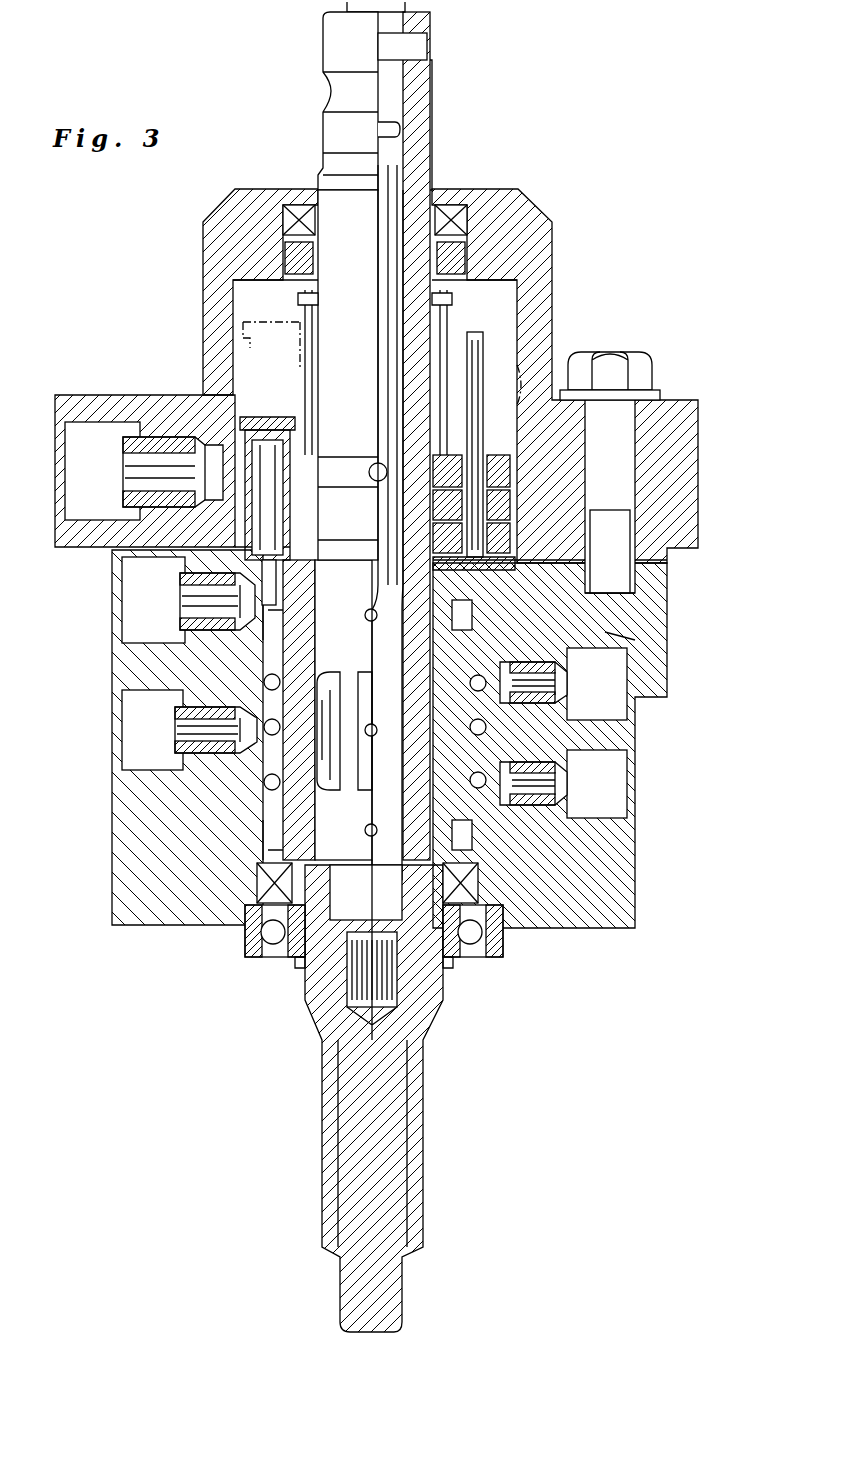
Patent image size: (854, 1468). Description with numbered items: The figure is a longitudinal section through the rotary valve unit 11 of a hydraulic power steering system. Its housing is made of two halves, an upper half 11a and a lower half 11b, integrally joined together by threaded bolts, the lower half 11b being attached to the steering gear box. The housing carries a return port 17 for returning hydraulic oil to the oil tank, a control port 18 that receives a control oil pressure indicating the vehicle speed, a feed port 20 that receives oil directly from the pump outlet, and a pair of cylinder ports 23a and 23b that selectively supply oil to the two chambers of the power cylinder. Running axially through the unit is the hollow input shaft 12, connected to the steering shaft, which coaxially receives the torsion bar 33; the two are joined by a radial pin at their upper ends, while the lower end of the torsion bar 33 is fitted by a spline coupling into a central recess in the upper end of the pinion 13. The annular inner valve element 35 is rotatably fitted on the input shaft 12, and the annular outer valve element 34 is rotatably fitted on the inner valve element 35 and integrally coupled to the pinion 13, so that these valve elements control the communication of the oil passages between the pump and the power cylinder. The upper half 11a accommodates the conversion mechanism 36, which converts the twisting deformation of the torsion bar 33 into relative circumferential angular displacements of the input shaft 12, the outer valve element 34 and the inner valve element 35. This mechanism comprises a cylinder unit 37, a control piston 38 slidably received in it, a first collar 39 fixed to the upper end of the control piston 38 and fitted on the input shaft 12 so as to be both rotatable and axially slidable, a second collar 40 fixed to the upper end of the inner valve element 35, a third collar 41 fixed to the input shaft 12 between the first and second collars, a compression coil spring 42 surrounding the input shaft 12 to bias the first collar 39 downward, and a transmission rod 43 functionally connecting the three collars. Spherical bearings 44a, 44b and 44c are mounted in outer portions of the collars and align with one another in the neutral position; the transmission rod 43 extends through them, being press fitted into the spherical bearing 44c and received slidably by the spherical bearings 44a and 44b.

The rotary valve unit 11 is at (411, 570).
The upper half of the housing 11a is at (554, 296).
The lower half of the housing 11b is at (628, 908).
The input shaft 12 is at (434, 178).
The pinion 13 is at (418, 1135).
The return port 17 is at (78, 492).
The control port 18 is at (130, 620).
The feed port 20 is at (132, 740).
The cylinder port 23a is at (618, 700).
The cylinder port 23b is at (618, 790).
The torsion bar 33 is at (410, 860).
The outer valve element 34 is at (490, 820).
The inner valve element 35 is at (515, 880).
The conversion mechanism 36 is at (177, 483).
The cylinder unit 37 is at (245, 510).
The control piston 38 is at (258, 540).
The first collar 39 is at (512, 466).
The second collar 40 is at (625, 606).
The third collar 41 is at (512, 502).
The compression coil spring 42 is at (300, 408).
The transmission rod 43 is at (485, 343).
The spherical bearing 44a is at (515, 448).
The spherical bearing 44b is at (510, 522).
The spherical bearing 44c is at (612, 640).